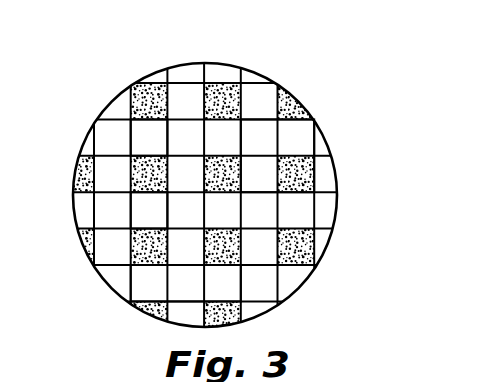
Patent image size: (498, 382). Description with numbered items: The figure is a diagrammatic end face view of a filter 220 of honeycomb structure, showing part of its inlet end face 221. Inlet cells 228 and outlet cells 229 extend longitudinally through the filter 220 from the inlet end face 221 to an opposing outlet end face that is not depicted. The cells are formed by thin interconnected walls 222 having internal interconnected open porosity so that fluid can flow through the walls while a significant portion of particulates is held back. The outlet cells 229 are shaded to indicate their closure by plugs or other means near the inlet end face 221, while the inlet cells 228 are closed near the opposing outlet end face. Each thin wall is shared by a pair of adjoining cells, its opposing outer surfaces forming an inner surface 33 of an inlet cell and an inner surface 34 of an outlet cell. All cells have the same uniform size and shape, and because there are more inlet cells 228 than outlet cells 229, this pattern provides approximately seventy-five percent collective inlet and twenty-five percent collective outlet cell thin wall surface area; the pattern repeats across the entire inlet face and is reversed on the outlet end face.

The filter 220 is at (265, 65).
The inlet end face 221 is at (222, 63).
The outlet cells 229 is at (203, 85).
The thin interconnected walls 222 is at (278, 143).
The inner surface of outlet cell 34 is at (282, 166).
The inlet cells 228 is at (150, 138).
The inner surface of inlet cell 33 is at (178, 266).